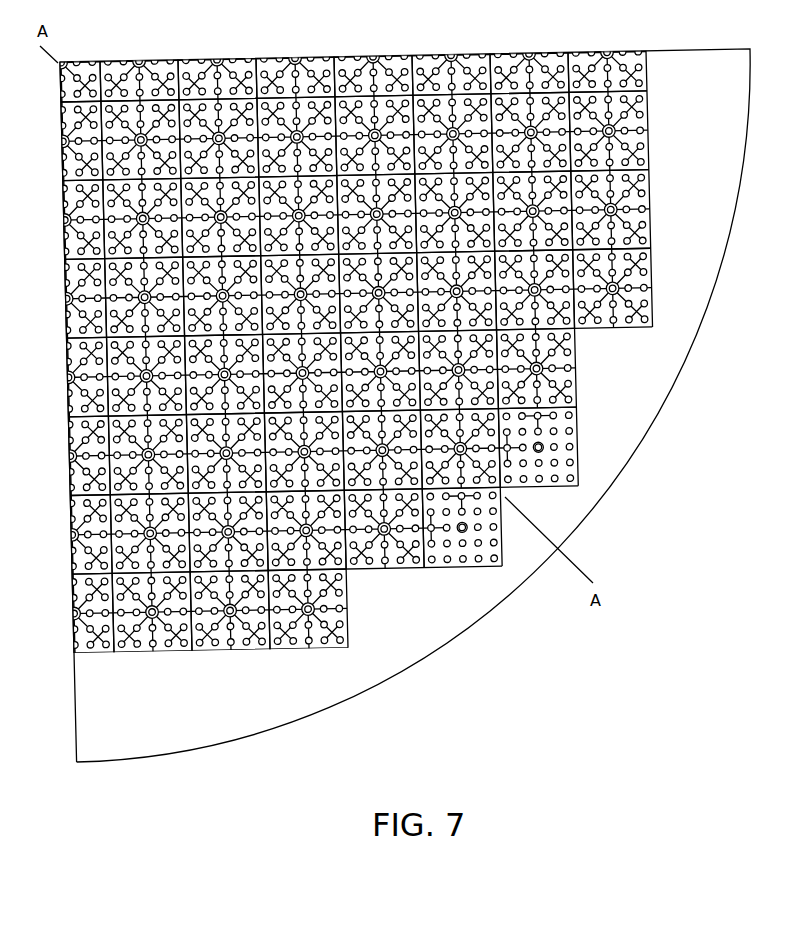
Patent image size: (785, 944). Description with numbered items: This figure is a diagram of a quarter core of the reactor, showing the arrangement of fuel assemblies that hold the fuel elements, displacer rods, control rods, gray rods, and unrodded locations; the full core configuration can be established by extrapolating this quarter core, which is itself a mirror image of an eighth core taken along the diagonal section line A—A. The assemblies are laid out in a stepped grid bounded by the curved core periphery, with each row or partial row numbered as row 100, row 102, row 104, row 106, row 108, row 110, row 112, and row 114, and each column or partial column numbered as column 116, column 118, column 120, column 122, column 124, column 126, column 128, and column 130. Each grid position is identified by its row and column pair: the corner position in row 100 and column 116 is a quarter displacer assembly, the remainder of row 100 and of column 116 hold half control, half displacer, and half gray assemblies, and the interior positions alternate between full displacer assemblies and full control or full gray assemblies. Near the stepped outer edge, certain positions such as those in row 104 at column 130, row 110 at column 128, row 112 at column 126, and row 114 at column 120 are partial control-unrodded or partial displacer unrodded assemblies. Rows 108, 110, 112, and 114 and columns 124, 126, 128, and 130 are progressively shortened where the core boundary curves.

The row 100 is at (646, 81).
The row 102 is at (646, 148).
The row 104 is at (648, 217).
The row 106 is at (648, 291).
The row 108 is at (573, 397).
The row 110 is at (573, 448).
The row 112 is at (502, 549).
The row 114 is at (348, 636).
The column 116 is at (66, 62).
The column 118 is at (123, 62).
The column 120 is at (198, 60).
The column 122 is at (281, 60).
The column 124 is at (365, 58).
The column 126 is at (440, 56).
The column 128 is at (518, 54).
The column 130 is at (592, 52).